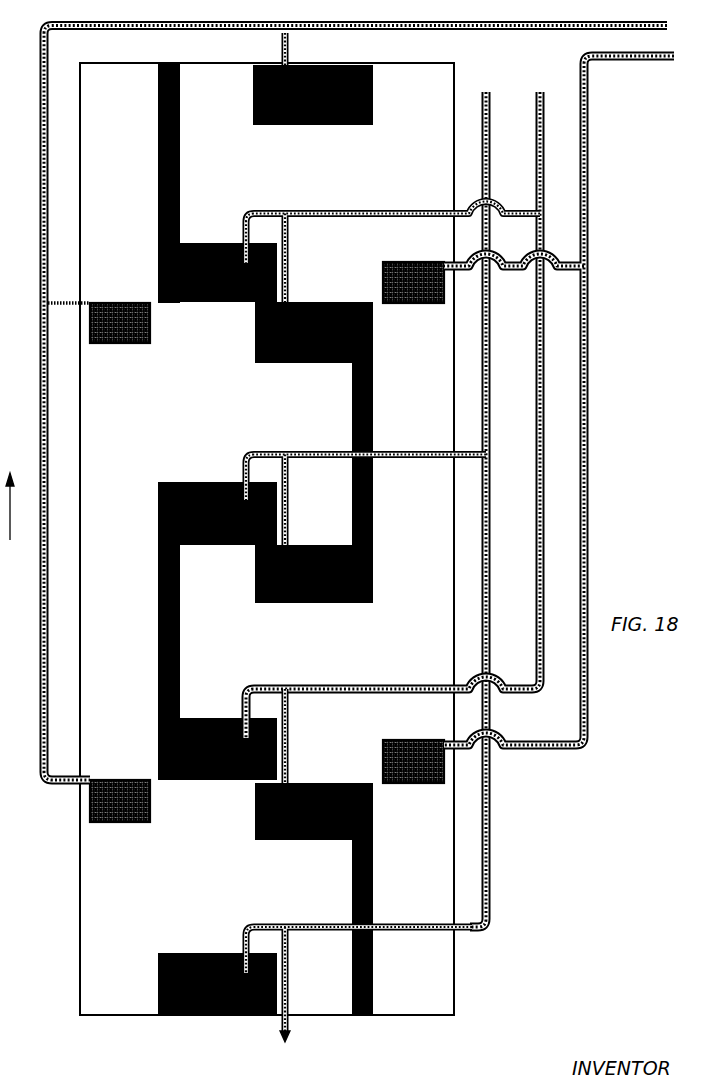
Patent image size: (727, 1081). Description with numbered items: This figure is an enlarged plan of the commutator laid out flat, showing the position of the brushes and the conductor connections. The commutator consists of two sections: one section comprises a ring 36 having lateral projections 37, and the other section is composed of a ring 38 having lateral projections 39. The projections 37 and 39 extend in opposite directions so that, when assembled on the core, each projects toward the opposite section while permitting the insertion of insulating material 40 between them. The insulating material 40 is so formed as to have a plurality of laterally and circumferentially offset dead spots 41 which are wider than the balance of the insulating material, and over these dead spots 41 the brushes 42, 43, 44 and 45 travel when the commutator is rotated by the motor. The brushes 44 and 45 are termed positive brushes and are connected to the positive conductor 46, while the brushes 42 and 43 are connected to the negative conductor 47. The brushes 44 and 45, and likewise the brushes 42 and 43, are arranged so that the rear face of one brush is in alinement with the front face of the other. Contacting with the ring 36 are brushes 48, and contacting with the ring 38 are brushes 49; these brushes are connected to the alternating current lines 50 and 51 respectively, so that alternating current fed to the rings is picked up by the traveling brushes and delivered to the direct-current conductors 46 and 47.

The ring 36 is at (100, 649).
The lateral projections 37 is at (242, 441).
The ring 38 is at (411, 536).
The lateral projections 39 is at (263, 190).
The insulating material 40 is at (158, 178).
The dead spots 41 is at (284, 128).
The brush 42 is at (213, 303).
The brush 43 is at (323, 302).
The brush 44 is at (218, 546).
The brush 45 is at (327, 65).
The positive conductor 46 is at (280, 47).
The negative conductor 47 is at (389, 210).
The brushes 48 is at (114, 303).
The brushes 49 is at (406, 262).
The alternating current line 50 is at (541, 31).
The alternating current line 51 is at (589, 147).